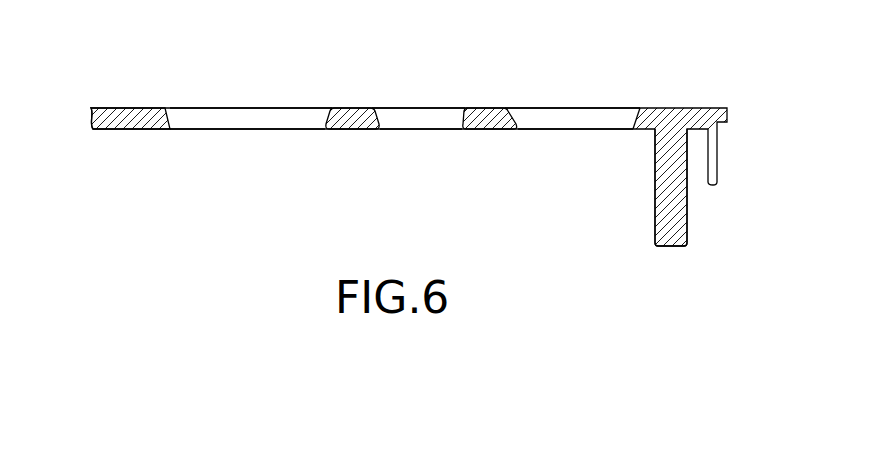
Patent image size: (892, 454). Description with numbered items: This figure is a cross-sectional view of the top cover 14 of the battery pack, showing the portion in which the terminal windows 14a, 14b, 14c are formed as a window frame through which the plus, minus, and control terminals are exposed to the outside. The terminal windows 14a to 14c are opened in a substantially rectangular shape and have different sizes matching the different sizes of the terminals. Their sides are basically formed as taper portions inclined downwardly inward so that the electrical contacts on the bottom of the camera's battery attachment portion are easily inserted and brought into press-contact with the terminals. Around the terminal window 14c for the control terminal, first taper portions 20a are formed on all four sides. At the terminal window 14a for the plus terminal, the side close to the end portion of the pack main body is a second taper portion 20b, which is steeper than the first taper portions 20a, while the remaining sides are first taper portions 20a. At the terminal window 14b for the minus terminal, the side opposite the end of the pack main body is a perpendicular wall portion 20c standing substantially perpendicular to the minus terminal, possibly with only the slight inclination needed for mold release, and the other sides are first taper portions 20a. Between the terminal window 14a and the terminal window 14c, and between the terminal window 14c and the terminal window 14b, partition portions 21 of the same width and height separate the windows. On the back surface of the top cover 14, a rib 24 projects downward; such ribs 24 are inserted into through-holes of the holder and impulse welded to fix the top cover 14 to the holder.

The top cover 14 is at (685, 86).
The terminal window 14a is at (583, 125).
The terminal window 14b is at (257, 125).
The terminal window 14c is at (422, 125).
The first taper portion 20a is at (325, 107).
The second taper portion 20b is at (633, 107).
The perpendicular wall portion 20c is at (170, 130).
The partition portion 21 is at (350, 107).
The rib 24 is at (672, 221).